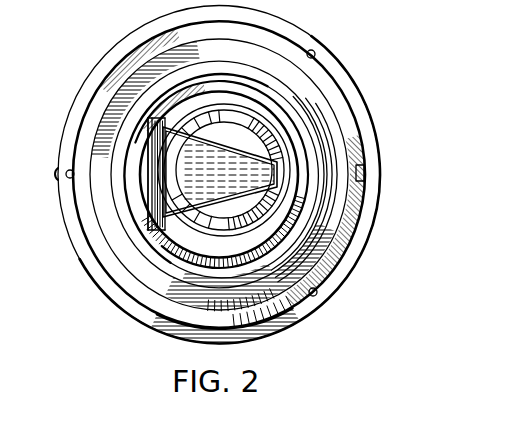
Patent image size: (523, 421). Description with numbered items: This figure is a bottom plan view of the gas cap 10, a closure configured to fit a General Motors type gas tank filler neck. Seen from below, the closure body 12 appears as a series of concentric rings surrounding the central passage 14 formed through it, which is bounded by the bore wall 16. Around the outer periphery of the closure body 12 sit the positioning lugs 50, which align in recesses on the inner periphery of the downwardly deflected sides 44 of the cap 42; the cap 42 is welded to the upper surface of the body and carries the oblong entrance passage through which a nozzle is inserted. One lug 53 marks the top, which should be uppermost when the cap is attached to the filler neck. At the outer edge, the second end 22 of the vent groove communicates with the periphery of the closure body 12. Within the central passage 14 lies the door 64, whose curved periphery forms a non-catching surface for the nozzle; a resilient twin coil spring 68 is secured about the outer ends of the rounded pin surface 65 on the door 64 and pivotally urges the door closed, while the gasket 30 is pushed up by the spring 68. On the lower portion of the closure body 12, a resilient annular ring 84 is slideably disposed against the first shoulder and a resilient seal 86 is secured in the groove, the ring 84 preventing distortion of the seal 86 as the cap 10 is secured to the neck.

The gas cap 10 is at (322, 32).
The closure body 12 is at (150, 256).
The central passage 14 is at (217, 244).
The bore wall 16 is at (188, 247).
The second end of vent groove 22 is at (364, 172).
The gasket 30 is at (207, 98).
The cap 42 is at (348, 125).
The downwardly deflected sides 44 is at (360, 103).
The positioning lugs 50 is at (68, 170).
The lug 53 is at (57, 171).
The door 64 is at (177, 143).
The rounded pin surface 65 is at (150, 190).
The twin coil spring 68 is at (183, 218).
The annular ring 84 is at (282, 285).
The seal 86 is at (313, 240).